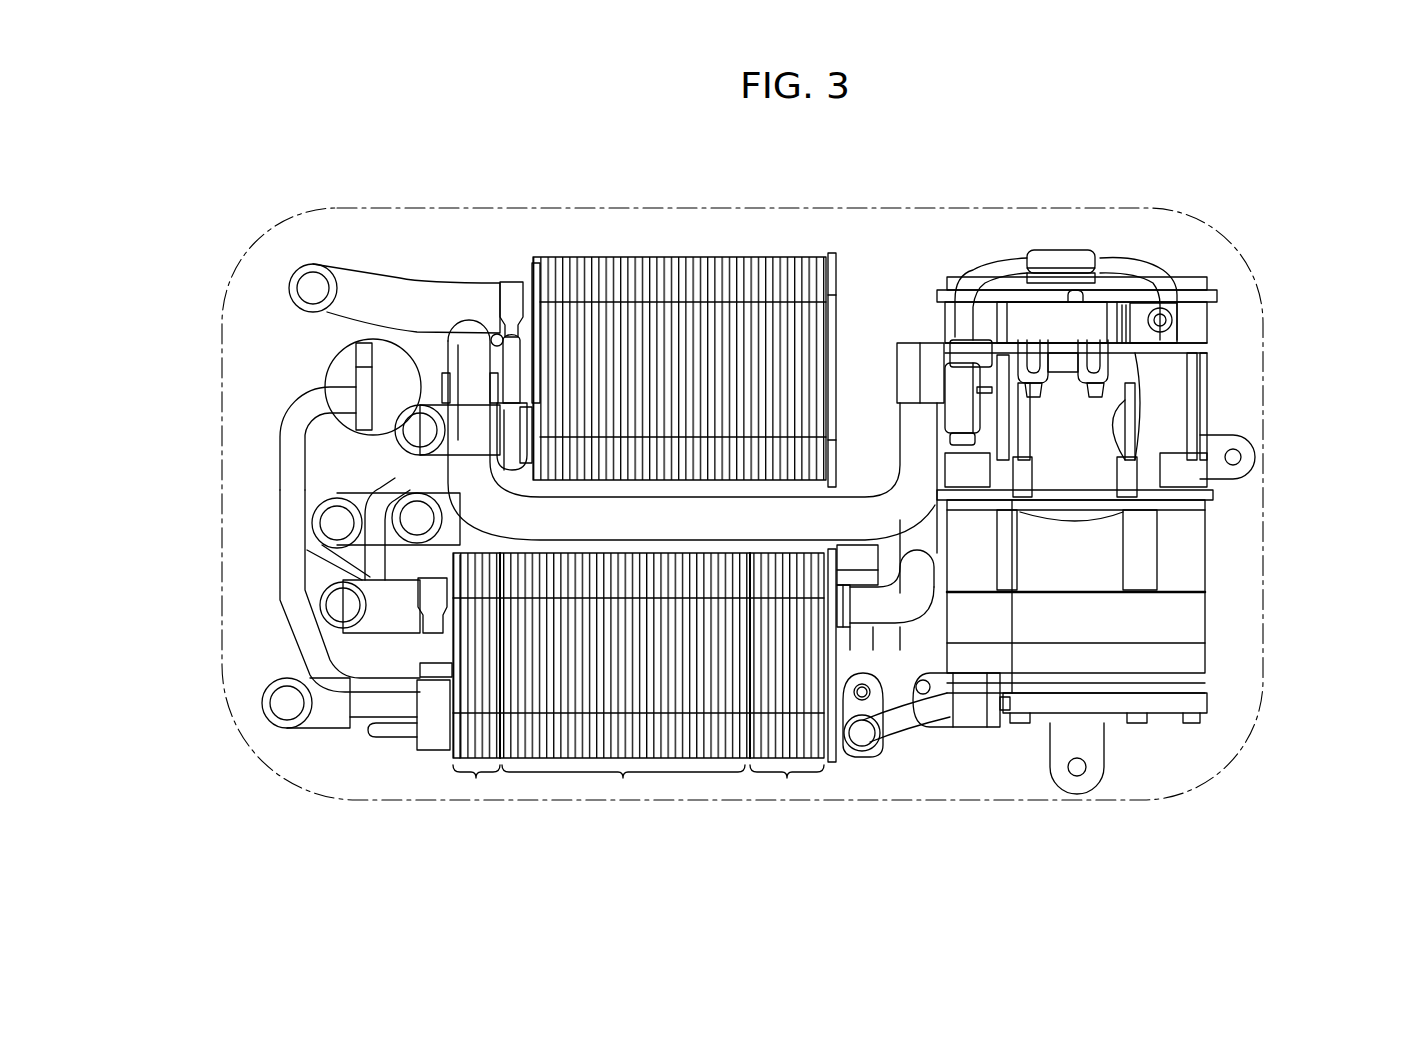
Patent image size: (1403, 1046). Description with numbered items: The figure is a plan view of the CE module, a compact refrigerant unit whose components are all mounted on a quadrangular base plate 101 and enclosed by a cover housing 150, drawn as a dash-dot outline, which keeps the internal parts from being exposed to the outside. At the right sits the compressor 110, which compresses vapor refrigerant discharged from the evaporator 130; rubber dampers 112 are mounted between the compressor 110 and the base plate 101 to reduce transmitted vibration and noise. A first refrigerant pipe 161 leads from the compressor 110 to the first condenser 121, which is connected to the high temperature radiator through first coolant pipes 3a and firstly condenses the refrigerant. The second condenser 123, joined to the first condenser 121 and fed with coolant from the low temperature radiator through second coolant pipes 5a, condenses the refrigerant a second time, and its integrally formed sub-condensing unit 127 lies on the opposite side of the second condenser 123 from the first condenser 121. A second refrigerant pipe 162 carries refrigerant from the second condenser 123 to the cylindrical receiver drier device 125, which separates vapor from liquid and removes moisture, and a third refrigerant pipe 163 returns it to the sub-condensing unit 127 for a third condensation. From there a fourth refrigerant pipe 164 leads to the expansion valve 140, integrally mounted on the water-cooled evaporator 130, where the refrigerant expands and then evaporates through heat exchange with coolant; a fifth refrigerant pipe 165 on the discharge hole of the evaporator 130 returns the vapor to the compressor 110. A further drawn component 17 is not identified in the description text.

The mounting bracket 17 is at (410, 405).
The expansion valve 140 is at (440, 377).
The evaporator 130 is at (654, 245).
The fifth refrigerant pipe 165 is at (920, 440).
The cover housing 150 is at (1213, 219).
The receiver drier device 125 is at (342, 362).
The compressor 110 is at (1092, 420).
The fourth refrigerant pipe 164 is at (420, 483).
The second refrigerant pipe 162 is at (293, 475).
The damper 112 is at (1248, 473).
The first coolant pipes 3a is at (400, 530).
The third refrigerant pipe 163 is at (338, 568).
The base plate 101 is at (1240, 632).
The second coolant pipes 5a is at (262, 712).
The sub-condensing unit 127 is at (476, 778).
The second condenser 123 is at (623, 778).
The first condenser 121 is at (787, 778).
The first refrigerant pipe 161 is at (902, 717).